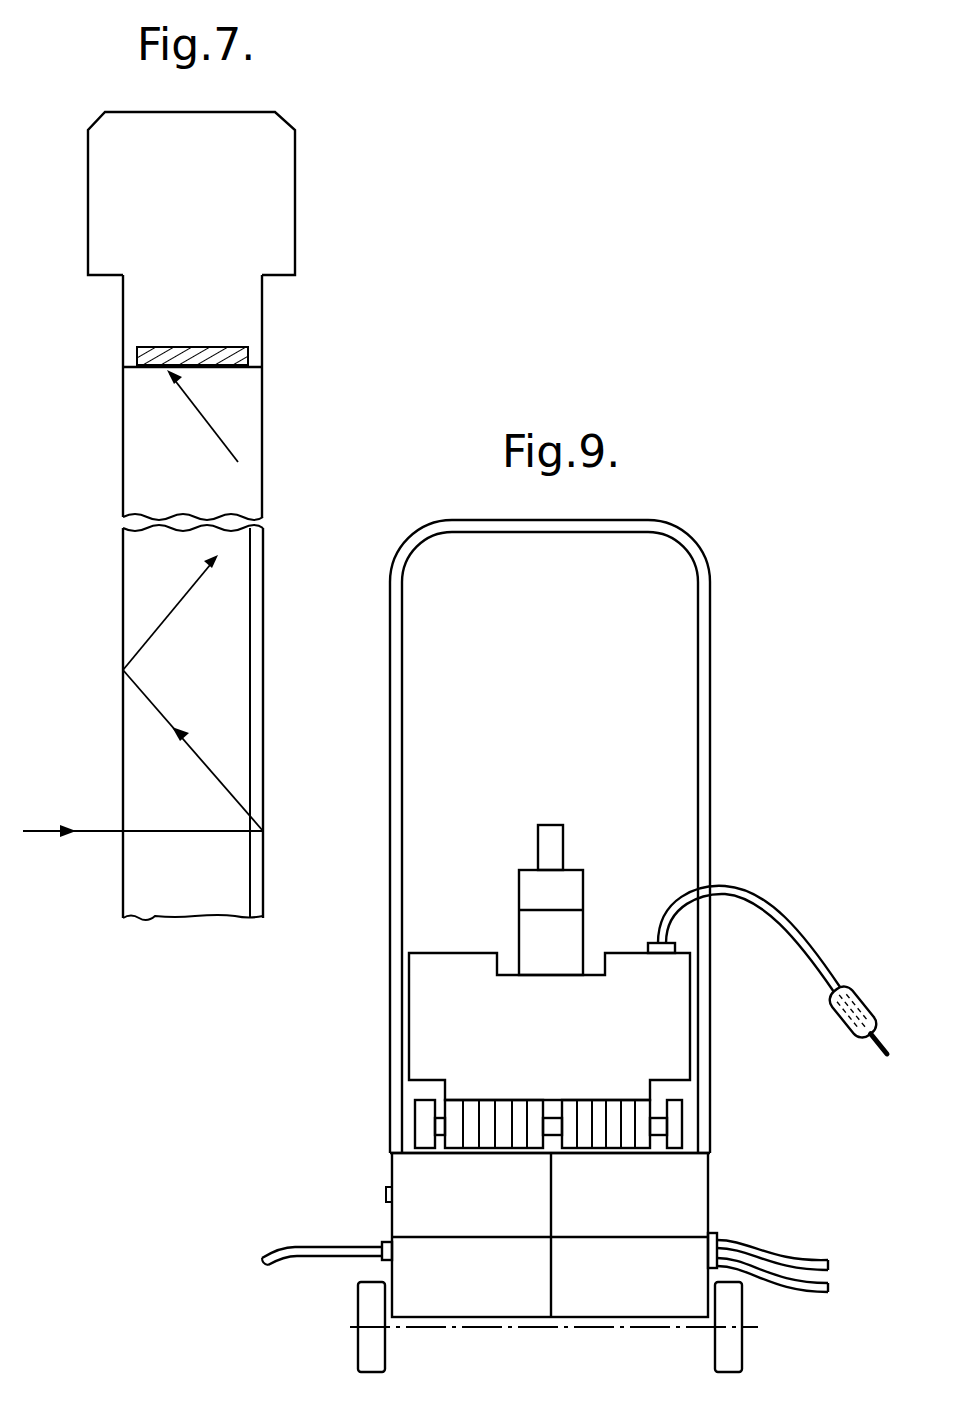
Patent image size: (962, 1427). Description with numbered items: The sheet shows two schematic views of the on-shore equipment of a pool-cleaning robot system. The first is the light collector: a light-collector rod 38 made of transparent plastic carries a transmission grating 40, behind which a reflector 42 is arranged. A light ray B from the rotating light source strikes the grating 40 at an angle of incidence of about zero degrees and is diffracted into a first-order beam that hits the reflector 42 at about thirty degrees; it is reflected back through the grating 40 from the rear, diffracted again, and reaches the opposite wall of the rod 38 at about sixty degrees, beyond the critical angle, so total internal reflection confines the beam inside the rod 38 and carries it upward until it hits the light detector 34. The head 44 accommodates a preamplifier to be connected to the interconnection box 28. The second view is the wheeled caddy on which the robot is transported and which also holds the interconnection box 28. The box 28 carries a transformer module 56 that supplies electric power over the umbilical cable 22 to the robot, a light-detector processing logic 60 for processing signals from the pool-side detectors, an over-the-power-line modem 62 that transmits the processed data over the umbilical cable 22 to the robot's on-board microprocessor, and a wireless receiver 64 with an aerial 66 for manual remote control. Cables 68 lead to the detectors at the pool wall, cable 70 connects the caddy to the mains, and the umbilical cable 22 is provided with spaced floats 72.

In FIG. 7, the head 44 is at (273, 176).
In FIG. 7, the light detector 34 is at (232, 347).
In FIG. 7, the light-collector rod 38 is at (152, 885).
In FIG. 7, the transmission grating 40 is at (248, 885).
In FIG. 7, the reflector 42 is at (264, 853).
In FIG. 7, the light ray B is at (143, 818).
In FIG. 9, the umbilical cable 22 is at (794, 916).
In FIG. 9, the float 72 is at (864, 1001).
In FIG. 9, the interconnection box 28 is at (728, 1212).
In FIG. 9, the aerial 66 is at (388, 1183).
In FIG. 9, the wireless receiver 64 is at (490, 1208).
In FIG. 9, the transformer module 56 is at (646, 1208).
In FIG. 9, the over-the-power-line modem 62 is at (490, 1288).
In FIG. 9, the light-detector processing logic 60 is at (646, 1288).
In FIG. 9, the cable 70 is at (326, 1247).
In FIG. 9, the cables 68 is at (840, 1280).